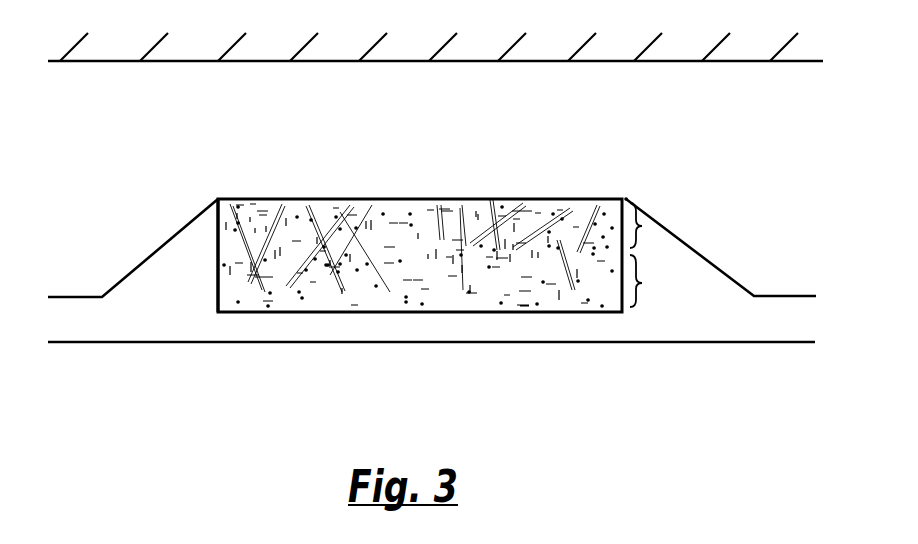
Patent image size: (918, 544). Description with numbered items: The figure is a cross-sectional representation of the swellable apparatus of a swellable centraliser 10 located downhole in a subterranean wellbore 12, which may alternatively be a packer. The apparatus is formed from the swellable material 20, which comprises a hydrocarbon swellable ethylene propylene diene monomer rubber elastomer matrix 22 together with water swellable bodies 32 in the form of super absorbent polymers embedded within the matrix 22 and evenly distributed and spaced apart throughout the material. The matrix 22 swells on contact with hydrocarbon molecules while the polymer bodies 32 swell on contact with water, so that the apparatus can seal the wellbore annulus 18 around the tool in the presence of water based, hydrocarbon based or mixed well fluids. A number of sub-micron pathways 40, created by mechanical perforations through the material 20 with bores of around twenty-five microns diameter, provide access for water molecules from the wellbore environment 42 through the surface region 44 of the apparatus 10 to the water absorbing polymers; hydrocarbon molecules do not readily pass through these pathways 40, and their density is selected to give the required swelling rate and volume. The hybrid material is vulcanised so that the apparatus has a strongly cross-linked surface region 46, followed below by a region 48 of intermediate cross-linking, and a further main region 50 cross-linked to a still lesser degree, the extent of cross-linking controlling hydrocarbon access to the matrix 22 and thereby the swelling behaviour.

The swellable centraliser 10 is at (537, 179).
The subterranean wellbore 12 is at (671, 61).
The annular space 18 is at (403, 93).
The swellable material 20 is at (222, 259).
The matrix 22 is at (418, 282).
The water swellable bodies 32 is at (238, 302).
The sub-micron pathways 40 is at (326, 230).
The wellbore environment 42 is at (403, 158).
The surface region 44 is at (246, 214).
The strongly cross-linked surface region 46 is at (627, 200).
The region of intermediate cross-linking 48 is at (642, 226).
The main region 50 is at (644, 283).